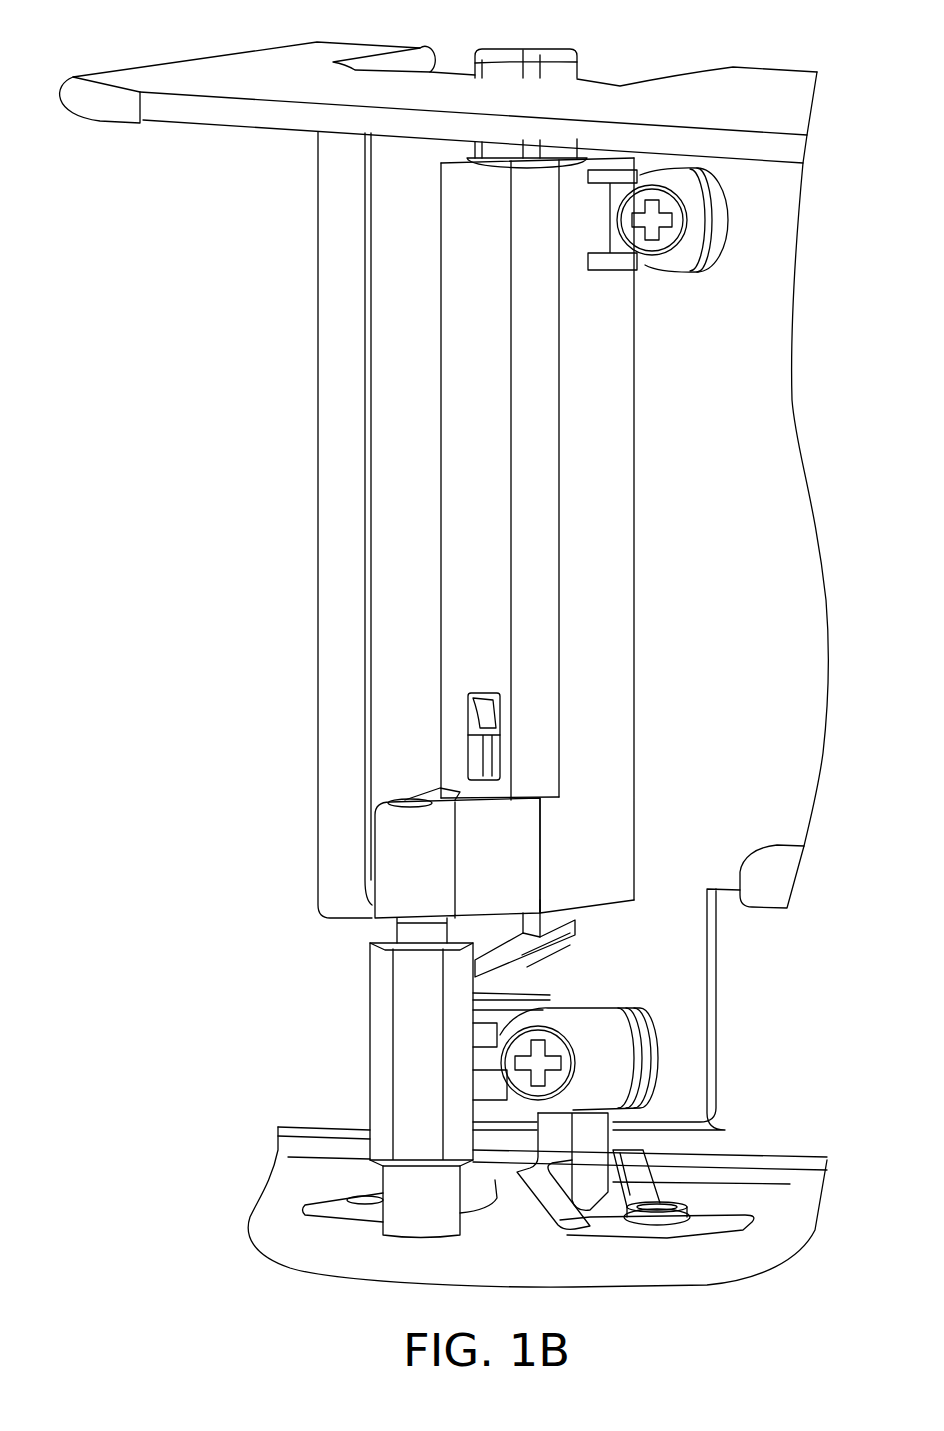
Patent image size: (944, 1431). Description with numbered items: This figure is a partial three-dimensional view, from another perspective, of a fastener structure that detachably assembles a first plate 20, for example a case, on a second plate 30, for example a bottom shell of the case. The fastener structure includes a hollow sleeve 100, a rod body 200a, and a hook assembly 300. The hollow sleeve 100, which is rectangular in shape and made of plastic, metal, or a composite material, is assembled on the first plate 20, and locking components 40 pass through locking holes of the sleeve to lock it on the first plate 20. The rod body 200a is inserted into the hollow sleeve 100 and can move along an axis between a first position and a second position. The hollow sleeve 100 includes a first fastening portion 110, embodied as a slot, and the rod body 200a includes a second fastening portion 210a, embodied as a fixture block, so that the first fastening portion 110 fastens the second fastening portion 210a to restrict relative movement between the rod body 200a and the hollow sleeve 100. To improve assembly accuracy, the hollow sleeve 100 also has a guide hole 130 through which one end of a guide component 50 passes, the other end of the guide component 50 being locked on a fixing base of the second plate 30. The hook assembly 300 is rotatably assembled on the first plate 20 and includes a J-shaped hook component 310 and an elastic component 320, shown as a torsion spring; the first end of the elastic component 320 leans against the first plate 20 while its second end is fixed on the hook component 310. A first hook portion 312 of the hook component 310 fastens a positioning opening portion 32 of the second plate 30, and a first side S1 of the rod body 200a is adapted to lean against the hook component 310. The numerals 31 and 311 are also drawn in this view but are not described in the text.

The first plate 20 is at (770, 403).
The second plate 30 is at (313, 1170).
The mounting foot 31 is at (643, 1193).
The positioning opening portion 32 is at (618, 1164).
The locking component 40 is at (663, 248).
The guide component 50 is at (383, 1043).
The hollow sleeve 100 is at (470, 473).
The first fastening portion 110 is at (474, 697).
The guide hole 130 is at (410, 804).
The rod body 200a is at (527, 50).
The second fastening portion 210a is at (486, 730).
The hook assembly 300 is at (655, 1141).
The hook component 310 is at (615, 1035).
The plate 311 is at (554, 1001).
The first hook portion 312 is at (530, 1207).
The elastic component 320 is at (653, 1080).
The first side S1 is at (519, 958).